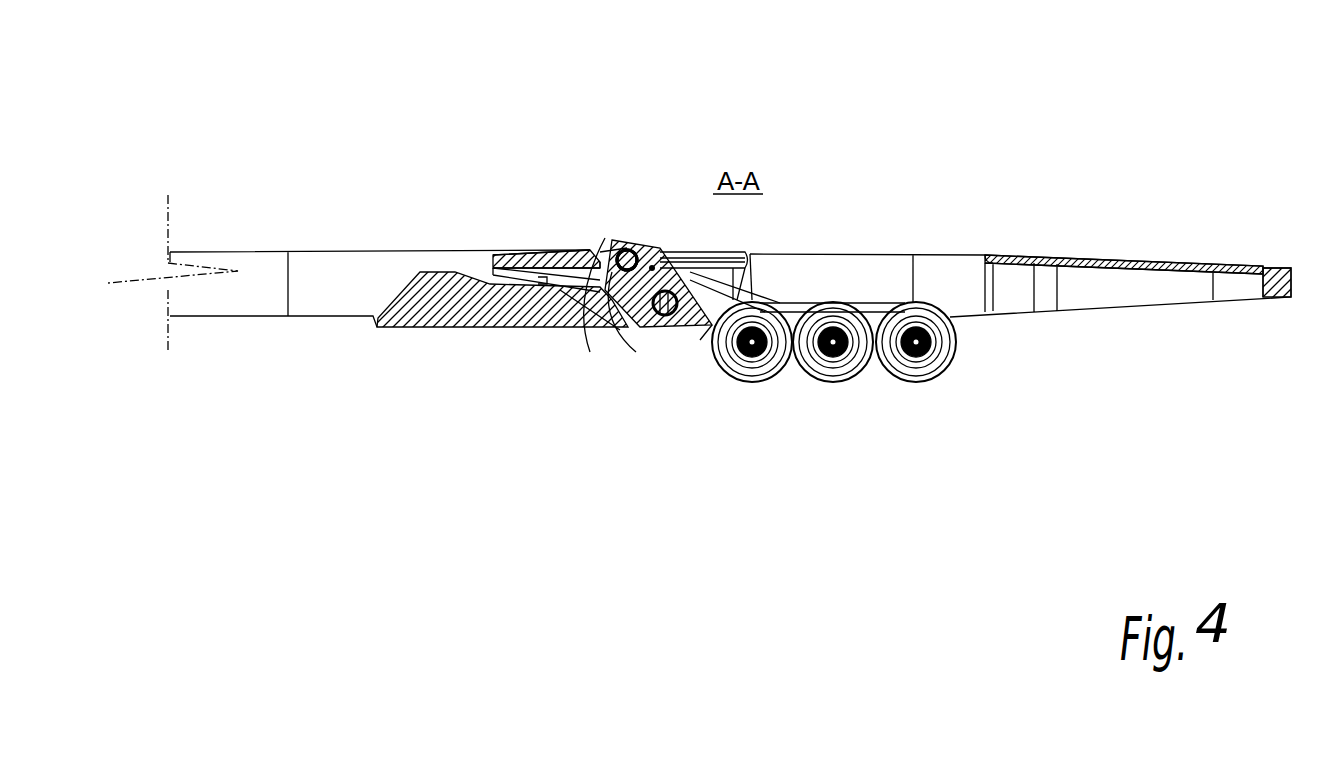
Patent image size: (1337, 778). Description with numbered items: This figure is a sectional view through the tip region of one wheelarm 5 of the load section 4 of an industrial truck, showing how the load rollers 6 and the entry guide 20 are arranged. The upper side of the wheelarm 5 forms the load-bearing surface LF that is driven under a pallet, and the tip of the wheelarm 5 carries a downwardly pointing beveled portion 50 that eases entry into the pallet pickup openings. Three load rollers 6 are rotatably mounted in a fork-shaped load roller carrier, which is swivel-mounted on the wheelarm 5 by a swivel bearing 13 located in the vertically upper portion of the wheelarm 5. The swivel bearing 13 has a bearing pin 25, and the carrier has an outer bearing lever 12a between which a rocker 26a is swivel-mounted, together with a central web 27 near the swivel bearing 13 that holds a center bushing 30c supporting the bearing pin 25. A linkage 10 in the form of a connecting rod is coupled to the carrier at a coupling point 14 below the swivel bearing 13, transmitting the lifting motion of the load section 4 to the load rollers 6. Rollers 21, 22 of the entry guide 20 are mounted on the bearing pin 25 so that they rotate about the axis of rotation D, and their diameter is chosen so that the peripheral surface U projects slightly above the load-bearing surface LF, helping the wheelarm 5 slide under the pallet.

The load section 4 is at (1221, 118).
The wheelarm 5 is at (228, 298).
The load roller 6 is at (910, 365).
The linkage 10 is at (420, 318).
The outer bearing lever 12a is at (706, 327).
The swivel bearing 13 is at (623, 238).
The coupling point 14 is at (648, 318).
The entry guide 20 is at (646, 228).
The roller 21 is at (600, 252).
The roller 22 is at (541, 252).
The bearing pin 25 is at (627, 260).
The rocker 26a is at (875, 322).
The central web 27 is at (655, 265).
The center bushing 30c is at (615, 305).
The beveled portion 50 is at (1208, 254).
The load-bearing surface LF is at (250, 248).
The peripheral surface U is at (612, 230).
The axis of rotation D is at (627, 260).